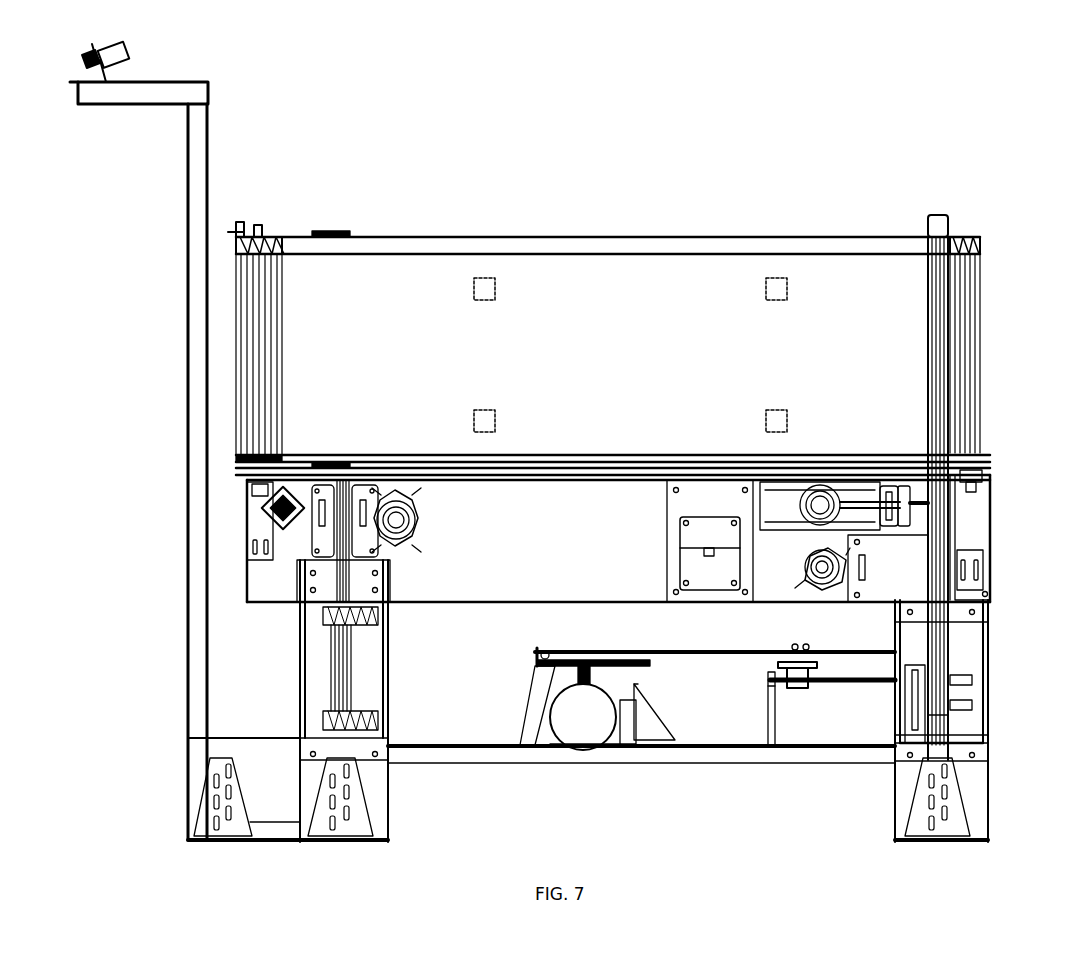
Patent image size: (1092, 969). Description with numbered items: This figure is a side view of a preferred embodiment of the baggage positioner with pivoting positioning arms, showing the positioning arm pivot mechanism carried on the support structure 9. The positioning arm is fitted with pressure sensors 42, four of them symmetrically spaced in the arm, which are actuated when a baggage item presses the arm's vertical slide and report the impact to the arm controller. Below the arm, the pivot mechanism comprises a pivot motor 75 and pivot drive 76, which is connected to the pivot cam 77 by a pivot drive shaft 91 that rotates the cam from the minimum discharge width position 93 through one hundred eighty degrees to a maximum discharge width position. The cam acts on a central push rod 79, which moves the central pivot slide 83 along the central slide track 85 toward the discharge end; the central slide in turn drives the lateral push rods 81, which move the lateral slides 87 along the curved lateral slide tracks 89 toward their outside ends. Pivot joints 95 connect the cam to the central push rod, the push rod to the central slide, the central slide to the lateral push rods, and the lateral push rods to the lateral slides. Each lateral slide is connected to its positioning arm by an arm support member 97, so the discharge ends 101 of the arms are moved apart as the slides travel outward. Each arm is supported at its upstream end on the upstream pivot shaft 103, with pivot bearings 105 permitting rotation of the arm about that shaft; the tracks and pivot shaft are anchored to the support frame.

The support structure 9 is at (569, 790).
The pressure sensors 42 is at (630, 302).
The pivot motor 75 is at (521, 730).
The pivot drive 76 is at (579, 779).
The pivot cam 77 is at (636, 752).
The central push rod 79 is at (715, 733).
The lateral push rods 81 is at (808, 748).
The central pivot slide 83 is at (775, 727).
The central slide track 85 is at (821, 748).
The lateral slides 87 is at (984, 703).
The lateral slide tracks 89 is at (979, 721).
The pivot drive shaft 91 is at (557, 749).
The minimum discharge width position 93 is at (594, 650).
The pivot joints 95 is at (637, 712).
The arm support member 97 is at (976, 487).
The discharge ends 101 is at (1006, 345).
The upstream pivot shaft 103 is at (246, 691).
The pivot bearings 105 is at (246, 654).